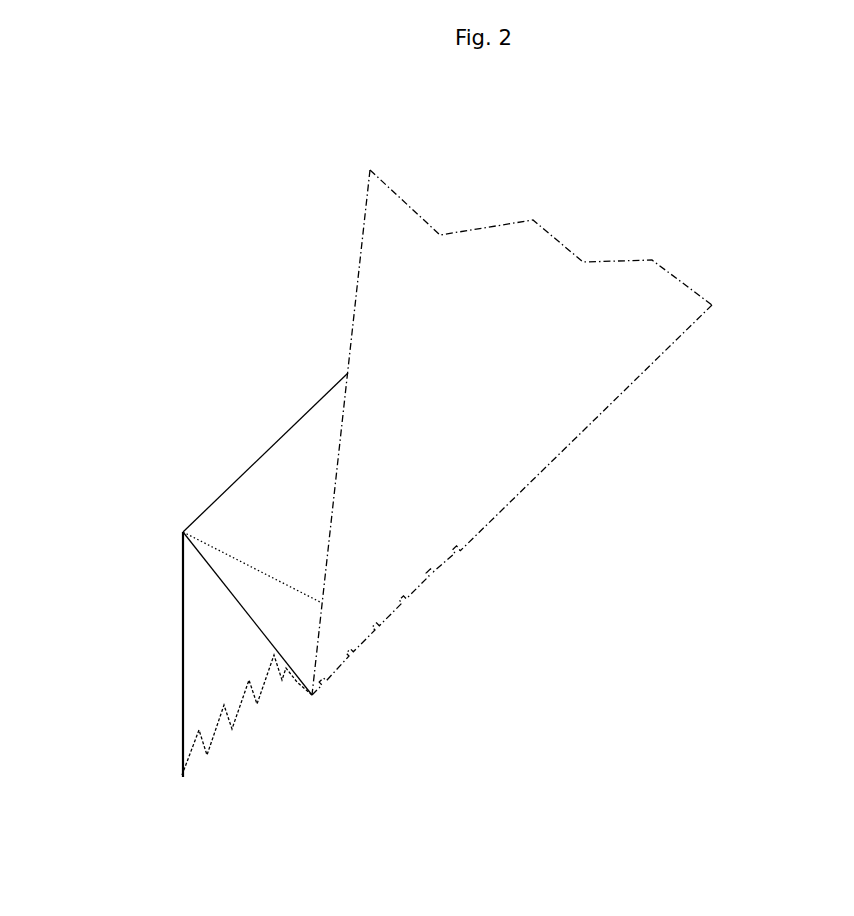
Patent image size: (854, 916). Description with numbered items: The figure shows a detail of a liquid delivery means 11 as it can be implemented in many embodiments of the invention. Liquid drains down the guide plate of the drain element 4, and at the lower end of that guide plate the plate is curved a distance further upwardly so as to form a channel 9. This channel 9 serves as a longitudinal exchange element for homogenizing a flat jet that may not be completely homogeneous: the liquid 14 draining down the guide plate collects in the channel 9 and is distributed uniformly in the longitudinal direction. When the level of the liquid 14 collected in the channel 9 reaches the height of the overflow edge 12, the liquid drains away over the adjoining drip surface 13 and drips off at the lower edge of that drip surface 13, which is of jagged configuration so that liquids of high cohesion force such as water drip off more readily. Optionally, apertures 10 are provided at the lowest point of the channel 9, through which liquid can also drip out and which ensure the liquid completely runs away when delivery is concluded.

The liquid delivery means 11 is at (138, 386).
The drain element 4 is at (615, 360).
The channel 9 is at (313, 695).
The apertures 10 is at (408, 603).
The overflow edge 12 is at (202, 508).
The drip surface 13 is at (178, 633).
The liquid 14 is at (280, 612).